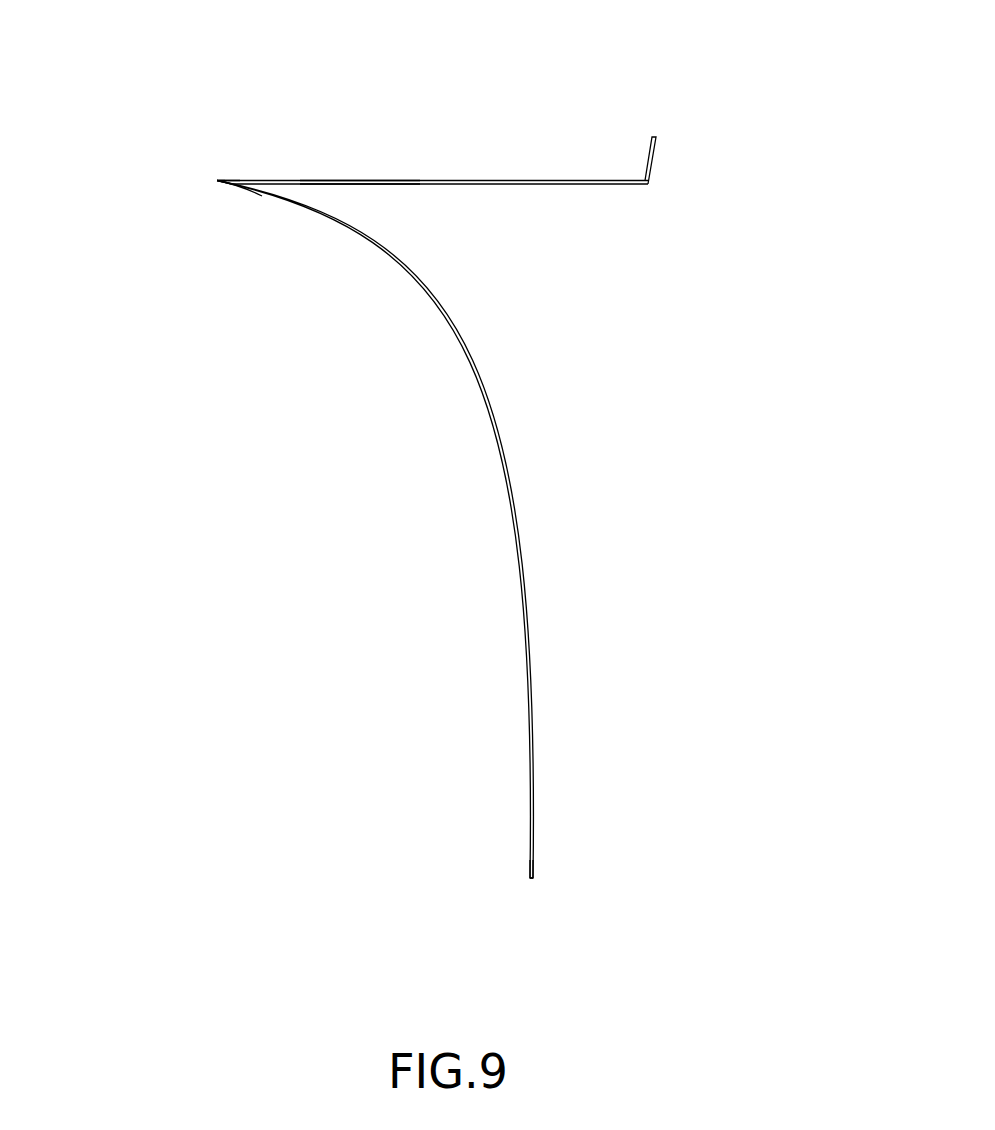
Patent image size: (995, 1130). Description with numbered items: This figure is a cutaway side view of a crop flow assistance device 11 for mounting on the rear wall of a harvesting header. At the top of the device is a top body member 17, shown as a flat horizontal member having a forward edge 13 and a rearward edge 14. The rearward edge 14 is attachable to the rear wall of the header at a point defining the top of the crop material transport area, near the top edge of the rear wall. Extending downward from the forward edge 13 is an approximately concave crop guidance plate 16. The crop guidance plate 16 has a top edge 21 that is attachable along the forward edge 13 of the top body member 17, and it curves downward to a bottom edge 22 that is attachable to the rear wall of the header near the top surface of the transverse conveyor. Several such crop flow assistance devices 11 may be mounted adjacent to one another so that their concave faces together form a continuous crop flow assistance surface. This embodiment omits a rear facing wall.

The crop flow assistance device 11 is at (455, 172).
The forward edge 13 is at (212, 174).
The rearward edge 14 is at (647, 124).
The crop guidance plate 16 is at (492, 438).
The top body member 17 is at (353, 174).
The top edge 21 is at (206, 184).
The bottom edge 22 is at (526, 886).